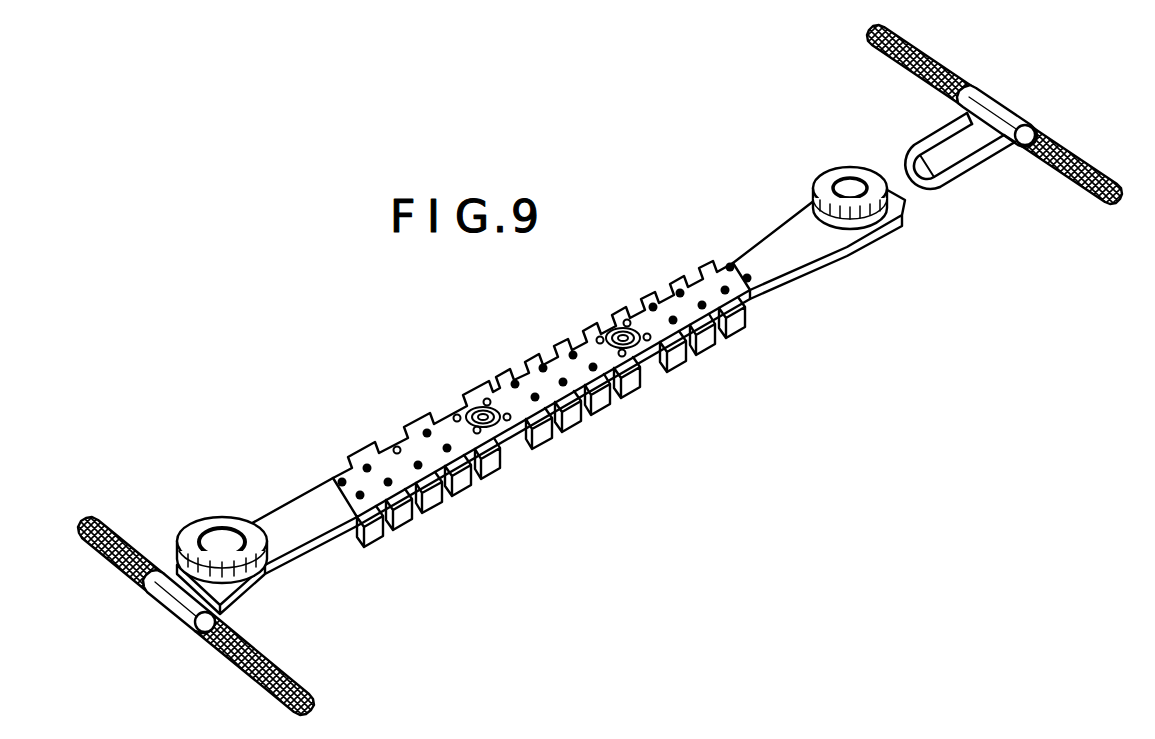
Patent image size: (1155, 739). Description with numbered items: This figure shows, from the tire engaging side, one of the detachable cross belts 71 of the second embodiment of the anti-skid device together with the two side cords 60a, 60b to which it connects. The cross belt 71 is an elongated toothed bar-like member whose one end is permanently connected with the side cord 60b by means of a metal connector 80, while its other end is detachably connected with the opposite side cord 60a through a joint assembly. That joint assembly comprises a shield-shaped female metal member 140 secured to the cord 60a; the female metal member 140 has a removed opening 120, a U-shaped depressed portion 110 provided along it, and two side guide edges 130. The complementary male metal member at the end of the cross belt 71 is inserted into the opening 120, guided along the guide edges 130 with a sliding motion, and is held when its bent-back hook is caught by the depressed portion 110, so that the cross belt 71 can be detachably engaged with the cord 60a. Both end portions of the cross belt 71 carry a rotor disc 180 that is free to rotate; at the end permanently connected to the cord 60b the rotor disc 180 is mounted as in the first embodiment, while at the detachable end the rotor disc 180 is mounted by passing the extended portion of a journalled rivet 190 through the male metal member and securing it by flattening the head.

The cross belt 71 is at (560, 377).
The rotor disc 180 is at (250, 562).
The journalled rivet 190 is at (219, 541).
The side cord 60a is at (905, 62).
The side cord 60b is at (290, 669).
The metal connector 80 is at (185, 603).
The U-shaped depressed portion 110 is at (920, 157).
The removed opening 120 is at (970, 147).
The side guide edges 130 is at (953, 130).
The female metal member 140 is at (970, 186).